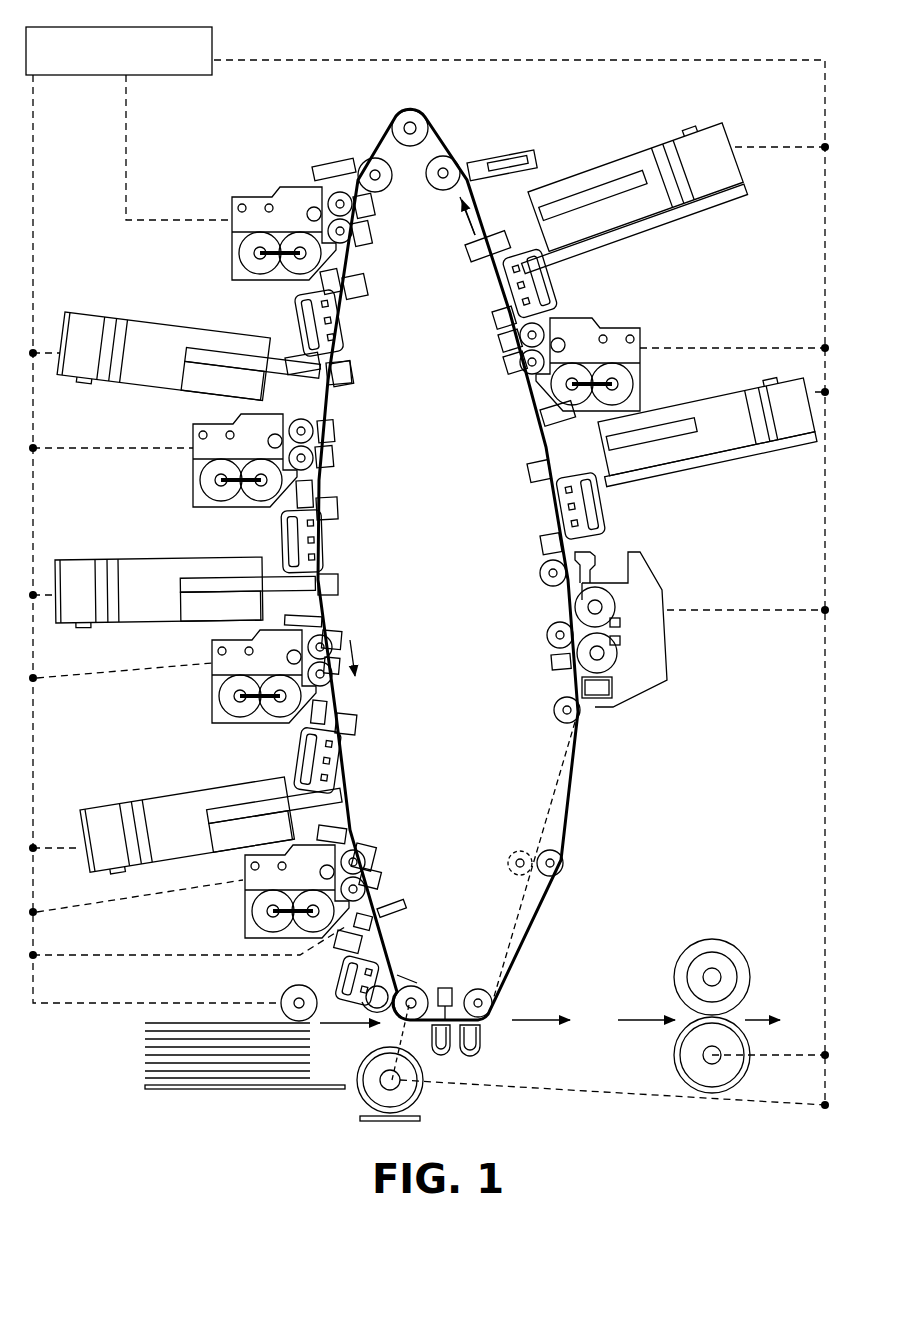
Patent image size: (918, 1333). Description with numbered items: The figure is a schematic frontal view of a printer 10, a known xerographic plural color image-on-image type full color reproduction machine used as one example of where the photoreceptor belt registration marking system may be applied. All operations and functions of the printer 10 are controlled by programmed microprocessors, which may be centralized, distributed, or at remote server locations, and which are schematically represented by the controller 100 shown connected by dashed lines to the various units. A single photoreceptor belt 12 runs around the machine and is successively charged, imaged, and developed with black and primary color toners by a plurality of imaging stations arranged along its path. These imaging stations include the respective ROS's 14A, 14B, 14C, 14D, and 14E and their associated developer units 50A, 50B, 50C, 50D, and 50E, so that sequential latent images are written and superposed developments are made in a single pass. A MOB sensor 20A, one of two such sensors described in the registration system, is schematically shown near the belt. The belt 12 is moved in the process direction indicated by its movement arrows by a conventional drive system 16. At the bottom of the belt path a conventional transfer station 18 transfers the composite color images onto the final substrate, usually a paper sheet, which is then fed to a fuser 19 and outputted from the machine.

The printer 10 is at (526, 56).
The controller 100 is at (212, 42).
The photoreceptor belt 12 is at (538, 918).
The ROS 14A is at (109, 810).
The ROS 14B is at (108, 560).
The ROS 14C is at (117, 322).
The ROS 14D is at (607, 168).
The ROS 14E is at (689, 408).
The developer unit 50A is at (285, 935).
The developer unit 50B is at (235, 723).
The developer unit 50C is at (233, 507).
The developer unit 50D is at (252, 282).
The developer unit 50E is at (640, 330).
The MOB sensor 20A is at (370, 917).
The drive system 16 is at (370, 1097).
The transfer station 18 is at (470, 1068).
The fuser 19 is at (767, 990).